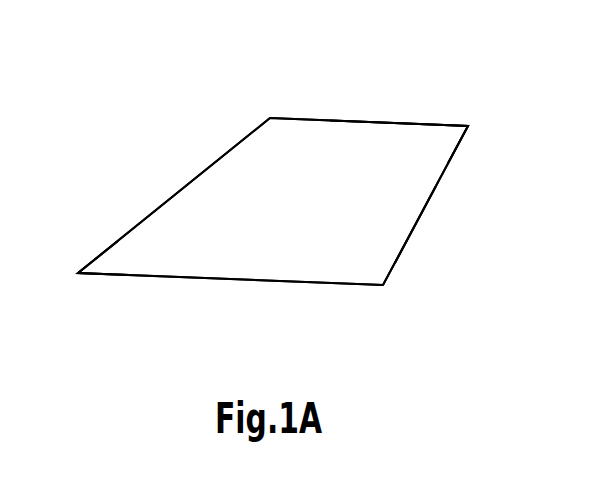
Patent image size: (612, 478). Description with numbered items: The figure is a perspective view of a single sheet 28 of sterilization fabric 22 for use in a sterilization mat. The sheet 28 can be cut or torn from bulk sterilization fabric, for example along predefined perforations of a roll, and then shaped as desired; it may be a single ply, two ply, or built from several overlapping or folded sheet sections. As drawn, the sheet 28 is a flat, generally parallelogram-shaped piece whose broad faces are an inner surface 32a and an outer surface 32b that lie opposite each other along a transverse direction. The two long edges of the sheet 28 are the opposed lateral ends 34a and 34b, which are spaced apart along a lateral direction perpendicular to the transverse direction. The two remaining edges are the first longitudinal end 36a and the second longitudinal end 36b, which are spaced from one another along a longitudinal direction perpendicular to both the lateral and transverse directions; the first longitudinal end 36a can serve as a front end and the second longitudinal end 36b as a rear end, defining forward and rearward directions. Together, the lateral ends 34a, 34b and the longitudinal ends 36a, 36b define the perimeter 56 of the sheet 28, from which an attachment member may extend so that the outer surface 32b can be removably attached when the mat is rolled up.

The sterilization fabric 22 is at (233, 217).
The sheet 28 is at (370, 120).
The inner surface 32a is at (280, 168).
The outer surface 32b is at (275, 283).
The lateral end 34a is at (155, 208).
The lateral end 34b is at (453, 158).
The first longitudinal end 36a is at (197, 280).
The second longitudinal end 36b is at (420, 120).
The perimeter 56 is at (410, 242).